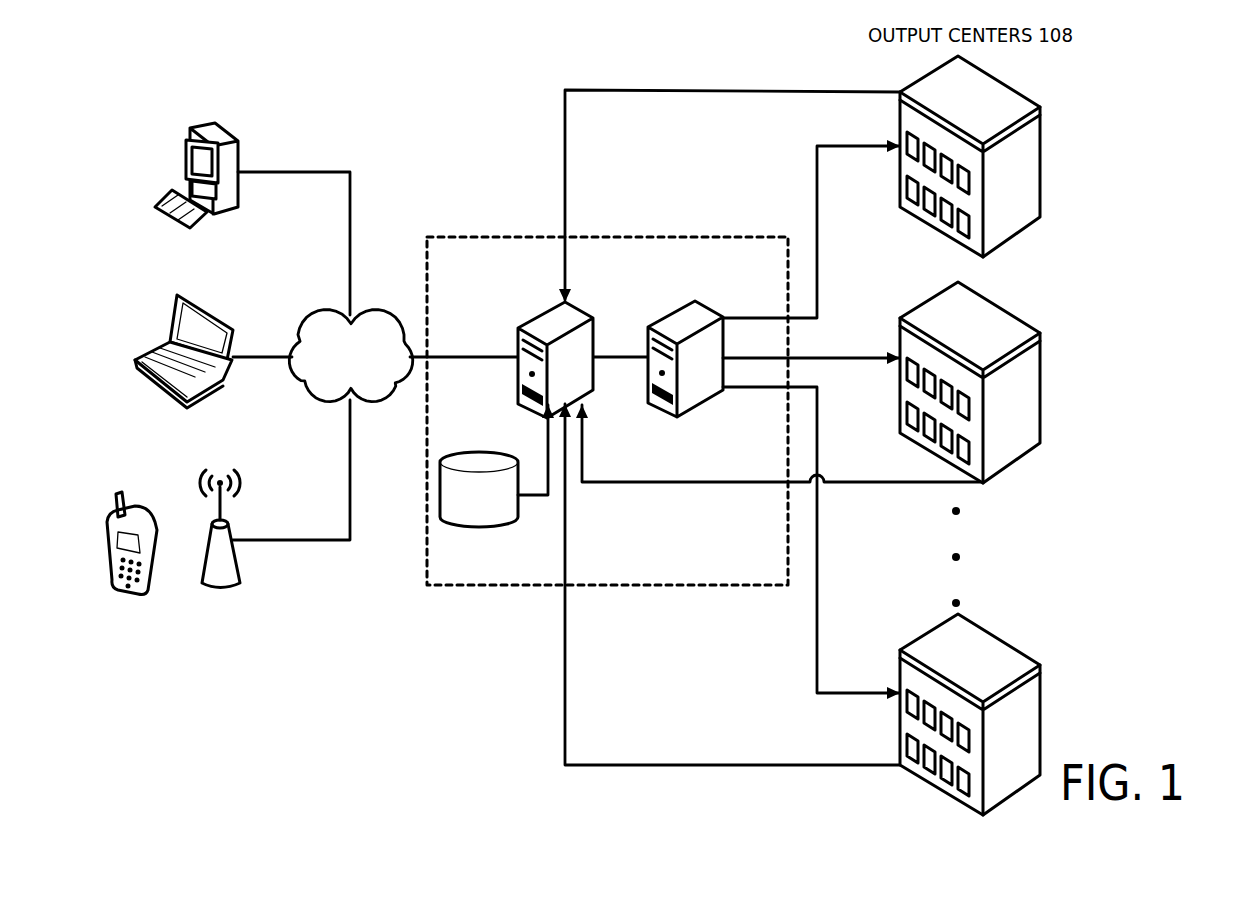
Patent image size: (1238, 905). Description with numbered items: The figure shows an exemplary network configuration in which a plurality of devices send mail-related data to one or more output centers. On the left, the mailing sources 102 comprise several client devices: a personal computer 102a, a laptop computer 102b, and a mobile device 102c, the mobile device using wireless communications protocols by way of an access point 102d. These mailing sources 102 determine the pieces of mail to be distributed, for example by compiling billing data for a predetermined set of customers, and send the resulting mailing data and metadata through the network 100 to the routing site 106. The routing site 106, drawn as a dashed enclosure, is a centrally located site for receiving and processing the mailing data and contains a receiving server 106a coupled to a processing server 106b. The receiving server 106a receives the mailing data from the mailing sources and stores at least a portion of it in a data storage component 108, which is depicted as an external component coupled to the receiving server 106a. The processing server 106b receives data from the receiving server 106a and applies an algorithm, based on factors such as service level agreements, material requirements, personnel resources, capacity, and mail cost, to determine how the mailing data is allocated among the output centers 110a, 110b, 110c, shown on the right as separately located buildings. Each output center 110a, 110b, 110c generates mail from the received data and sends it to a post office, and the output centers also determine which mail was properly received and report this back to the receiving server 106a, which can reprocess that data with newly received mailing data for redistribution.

The network 100 is at (368, 397).
The mailing sources 102 is at (204, 405).
The client device 102a is at (215, 135).
The client device 102b is at (230, 325).
The client device 102c is at (136, 598).
The access point 102d is at (228, 530).
The routing site 106 is at (607, 411).
The receiving server 106a is at (565, 298).
The processing server 106b is at (695, 300).
The data storage component 108 is at (500, 447).
The output center 110a is at (1040, 103).
The output center 110b is at (1040, 333).
The output center 110c is at (1040, 667).